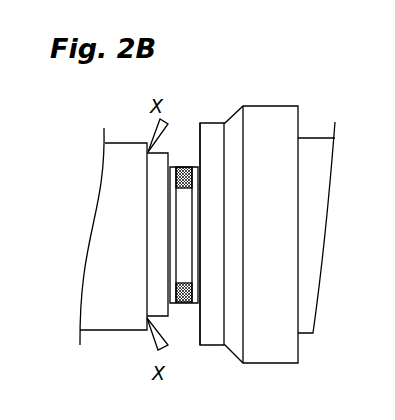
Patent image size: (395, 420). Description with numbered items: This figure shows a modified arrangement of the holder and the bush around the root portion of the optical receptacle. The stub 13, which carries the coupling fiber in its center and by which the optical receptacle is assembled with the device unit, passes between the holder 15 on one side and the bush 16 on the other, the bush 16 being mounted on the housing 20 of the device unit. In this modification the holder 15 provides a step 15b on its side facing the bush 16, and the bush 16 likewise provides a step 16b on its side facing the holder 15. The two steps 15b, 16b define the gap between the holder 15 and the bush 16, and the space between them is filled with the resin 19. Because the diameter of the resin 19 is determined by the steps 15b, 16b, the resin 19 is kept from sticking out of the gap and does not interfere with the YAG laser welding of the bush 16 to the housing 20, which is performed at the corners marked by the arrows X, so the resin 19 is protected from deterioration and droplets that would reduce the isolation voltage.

The stub 13 is at (182, 197).
The holder 15 is at (210, 332).
The step 15b is at (195, 222).
The bush 16 is at (156, 181).
The step 16b is at (170, 217).
The resin 19 is at (183, 303).
The housing 20 is at (112, 273).